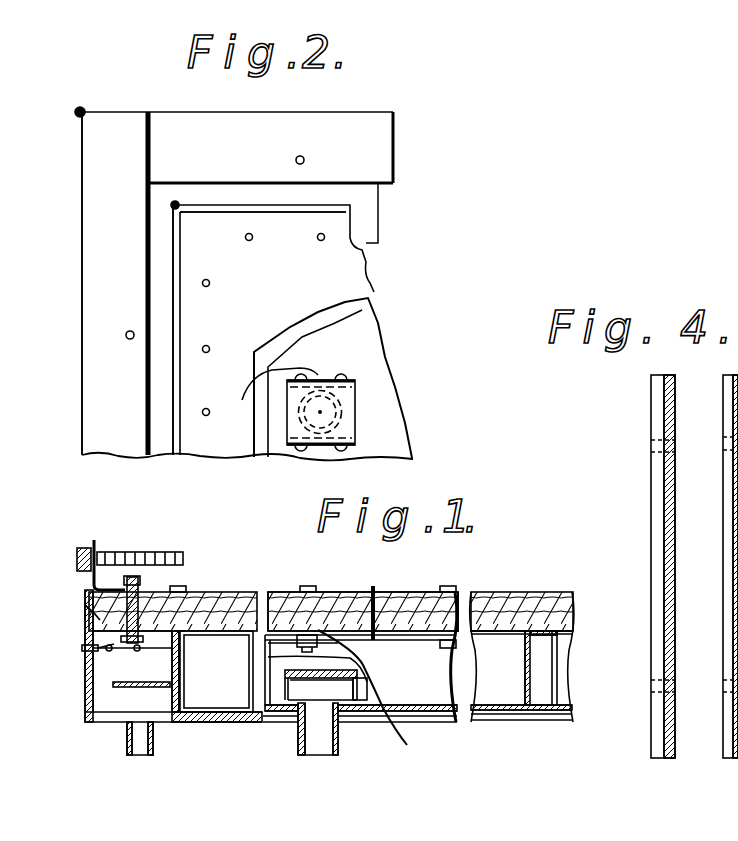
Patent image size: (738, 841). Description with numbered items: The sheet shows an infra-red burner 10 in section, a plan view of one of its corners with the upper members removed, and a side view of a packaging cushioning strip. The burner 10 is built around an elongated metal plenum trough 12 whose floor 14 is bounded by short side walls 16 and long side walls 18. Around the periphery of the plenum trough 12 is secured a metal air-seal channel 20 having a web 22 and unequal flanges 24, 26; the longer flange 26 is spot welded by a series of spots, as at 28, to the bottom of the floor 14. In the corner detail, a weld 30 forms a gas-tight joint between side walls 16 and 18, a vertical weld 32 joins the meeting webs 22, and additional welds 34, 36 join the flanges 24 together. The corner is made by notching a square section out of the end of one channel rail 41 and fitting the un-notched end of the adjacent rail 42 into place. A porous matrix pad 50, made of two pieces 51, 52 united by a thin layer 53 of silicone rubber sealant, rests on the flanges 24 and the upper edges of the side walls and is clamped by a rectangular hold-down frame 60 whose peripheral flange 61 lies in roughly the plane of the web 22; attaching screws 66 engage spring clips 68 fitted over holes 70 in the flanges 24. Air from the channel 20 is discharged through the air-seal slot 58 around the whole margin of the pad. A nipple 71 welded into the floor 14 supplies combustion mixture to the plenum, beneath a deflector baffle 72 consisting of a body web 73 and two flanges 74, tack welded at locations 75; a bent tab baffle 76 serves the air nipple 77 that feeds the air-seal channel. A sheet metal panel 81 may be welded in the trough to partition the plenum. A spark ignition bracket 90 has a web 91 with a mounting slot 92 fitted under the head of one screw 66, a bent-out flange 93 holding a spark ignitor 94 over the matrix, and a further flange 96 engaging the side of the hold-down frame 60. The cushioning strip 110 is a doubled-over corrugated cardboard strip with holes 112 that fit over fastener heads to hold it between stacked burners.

In FIG. 1, the burner 10 is at (220, 762).
In FIG. 1, the plenum trough 12 is at (435, 724).
In FIG. 2, the trough floor 14 is at (245, 307).
In FIG. 1, the trough floor 14 is at (502, 720).
In FIG. 2, the side wall 16 is at (182, 322).
In FIG. 1, the side wall 16 is at (186, 692).
In FIG. 2, the side wall 18 is at (298, 210).
In FIG. 1, the side wall 18 is at (423, 684).
In FIG. 2, the air-seal channel 20 is at (80, 186).
In FIG. 1, the air-seal channel 20 is at (85, 701).
In FIG. 2, the web 22 is at (342, 112).
In FIG. 1, the web 22 is at (85, 682).
In FIG. 2, the flange 24 is at (101, 246).
In FIG. 1, the flange 24 is at (85, 657).
In FIG. 2, the flange 26 is at (374, 244).
In FIG. 1, the flange 26 is at (113, 722).
In FIG. 2, the spot weld 28 is at (321, 243).
In FIG. 1, the spot weld 28 is at (497, 712).
In FIG. 2, the weld 30 is at (176, 210).
In FIG. 2, the vertical weld 32 is at (83, 108).
In FIG. 2, the weld 34 is at (118, 112).
In FIG. 2, the weld 36 is at (152, 128).
In FIG. 2, the channel rail 41 is at (393, 110).
In FIG. 2, the adjacent channel rail 42 is at (82, 242).
In FIG. 1, the porous matrix pad 50 is at (280, 587).
In FIG. 1, the matrix pad piece 51 is at (318, 592).
In FIG. 1, the matrix pad piece 52 is at (382, 592).
In FIG. 1, the layer of silicone rubber sealant 53 is at (347, 623).
In FIG. 2, the air-seal slot 58 is at (160, 398).
In FIG. 1, the air-seal slot 58 is at (182, 645).
In FIG. 1, the hold-down frame 60 is at (82, 650).
In FIG. 1, the peripheral flange 61 is at (86, 654).
In FIG. 1, the attaching screws 66 is at (145, 586).
In FIG. 1, the spring clips 68 is at (393, 662).
In FIG. 2, the holes 70 is at (304, 160).
In FIG. 1, the holes 70 is at (112, 666).
In FIG. 2, the nipple 71 is at (335, 422).
In FIG. 1, the nipple 71 is at (340, 724).
In FIG. 2, the deflector baffle 72 is at (369, 384).
In FIG. 1, the deflector baffle 72 is at (279, 683).
In FIG. 2, the body web 73 is at (352, 412).
In FIG. 1, the body web 73 is at (360, 690).
In FIG. 2, the flanges 74 is at (320, 380).
In FIG. 1, the flanges 74 is at (275, 708).
In FIG. 2, the tack weld locations 75 is at (295, 448).
In FIG. 1, the tack weld locations 75 is at (292, 710).
In FIG. 1, the bent tab baffle 76 is at (135, 687).
In FIG. 1, the air nipple 77 is at (128, 754).
In FIG. 1, the sheet metal panel 81 is at (525, 676).
In FIG. 1, the bracket 90 is at (90, 580).
In FIG. 1, the web 91 is at (130, 577).
In FIG. 1, the mounting hole or slot 92 is at (128, 569).
In FIG. 1, the flange 93 is at (118, 546).
In FIG. 1, the spark ignitor 94 is at (183, 557).
In FIG. 1, the flange 96 is at (85, 614).
In FIG. 4, the cushioning strips 110 is at (648, 438).
In FIG. 4, the holes 112 is at (648, 454).